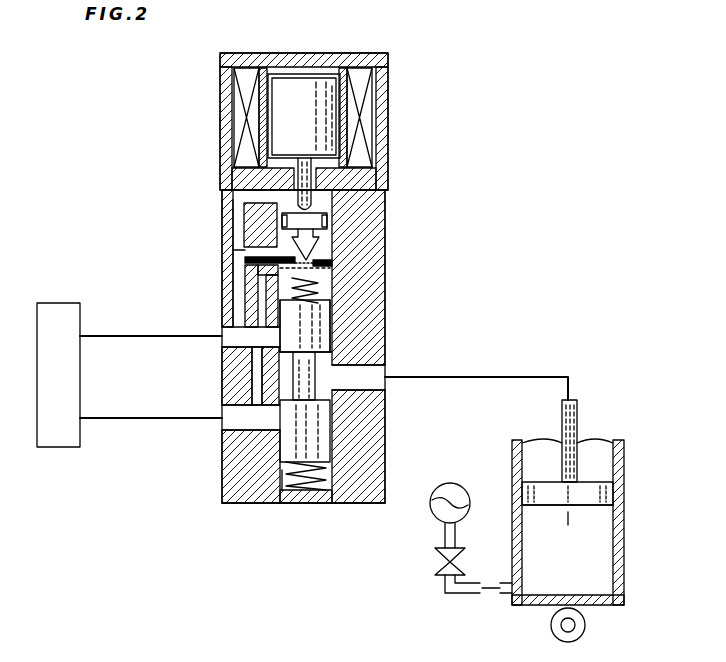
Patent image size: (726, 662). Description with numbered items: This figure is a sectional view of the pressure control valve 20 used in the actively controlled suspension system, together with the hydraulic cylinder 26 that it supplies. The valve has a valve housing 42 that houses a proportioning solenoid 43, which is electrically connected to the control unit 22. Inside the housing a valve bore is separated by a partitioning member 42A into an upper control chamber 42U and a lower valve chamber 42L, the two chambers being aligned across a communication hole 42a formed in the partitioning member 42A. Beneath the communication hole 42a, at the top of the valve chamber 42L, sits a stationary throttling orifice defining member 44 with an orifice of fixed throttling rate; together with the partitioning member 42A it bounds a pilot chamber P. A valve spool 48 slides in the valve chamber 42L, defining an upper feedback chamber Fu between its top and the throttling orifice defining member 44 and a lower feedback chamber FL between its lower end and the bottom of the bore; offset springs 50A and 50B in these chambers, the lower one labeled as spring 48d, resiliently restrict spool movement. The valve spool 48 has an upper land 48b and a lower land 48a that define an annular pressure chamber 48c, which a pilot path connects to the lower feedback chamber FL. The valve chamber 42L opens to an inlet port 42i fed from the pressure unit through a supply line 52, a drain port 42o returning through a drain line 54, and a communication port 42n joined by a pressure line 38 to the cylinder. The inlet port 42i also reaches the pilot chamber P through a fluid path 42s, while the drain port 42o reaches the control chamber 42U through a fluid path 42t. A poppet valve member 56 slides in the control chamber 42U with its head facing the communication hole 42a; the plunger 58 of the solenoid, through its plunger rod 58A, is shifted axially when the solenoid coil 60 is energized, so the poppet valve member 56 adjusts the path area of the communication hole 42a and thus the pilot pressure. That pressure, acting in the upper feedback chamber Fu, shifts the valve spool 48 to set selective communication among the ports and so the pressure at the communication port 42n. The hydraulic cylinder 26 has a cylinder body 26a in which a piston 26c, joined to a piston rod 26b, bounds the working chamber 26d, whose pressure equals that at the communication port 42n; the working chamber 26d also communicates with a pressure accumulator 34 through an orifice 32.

The solenoid operated control valve 20 is at (414, 175).
The control unit 22 is at (57, 302).
The hydraulic cylinder 26 is at (560, 514).
The cylinder body 26a is at (622, 538).
The piston rod 26b is at (578, 407).
The piston 26c is at (520, 490).
The working chamber 26d is at (600, 581).
The orifice 32 is at (437, 566).
The pressure accumulator 34 is at (432, 512).
The pressure line 38 is at (521, 375).
The valve housing 42 is at (385, 287).
The partitioning member 42A is at (332, 243).
The valve chamber 42L is at (382, 298).
The control chamber 42U is at (236, 196).
The communication hole 42a is at (385, 226).
The inlet port 42i is at (222, 436).
The communication port 42n is at (385, 398).
The drain port 42o is at (232, 336).
The fluid path 42s is at (256, 391).
The fluid path 42t is at (236, 231).
The proportioning solenoid 43 is at (390, 97).
The throttling orifice defining member 44 is at (316, 266).
The valve spool 48 is at (287, 367).
The lower land 48a is at (325, 451).
The upper land 48b is at (330, 318).
The annular pressure chamber 48c is at (385, 351).
The spool spring 48d is at (293, 446).
The offset spring 50A is at (262, 281).
The offset spring 50B is at (305, 510).
The supply line 52 is at (107, 416).
The drain line 54 is at (107, 333).
The poppet valve member 56 is at (278, 222).
The plunger 58 is at (323, 47).
The plunger rod 58A is at (310, 153).
The solenoid coil 60 is at (242, 86).
The pilot chamber P is at (262, 266).
The upper feedback chamber Fu is at (290, 293).
The lower feedback chamber FL is at (270, 506).